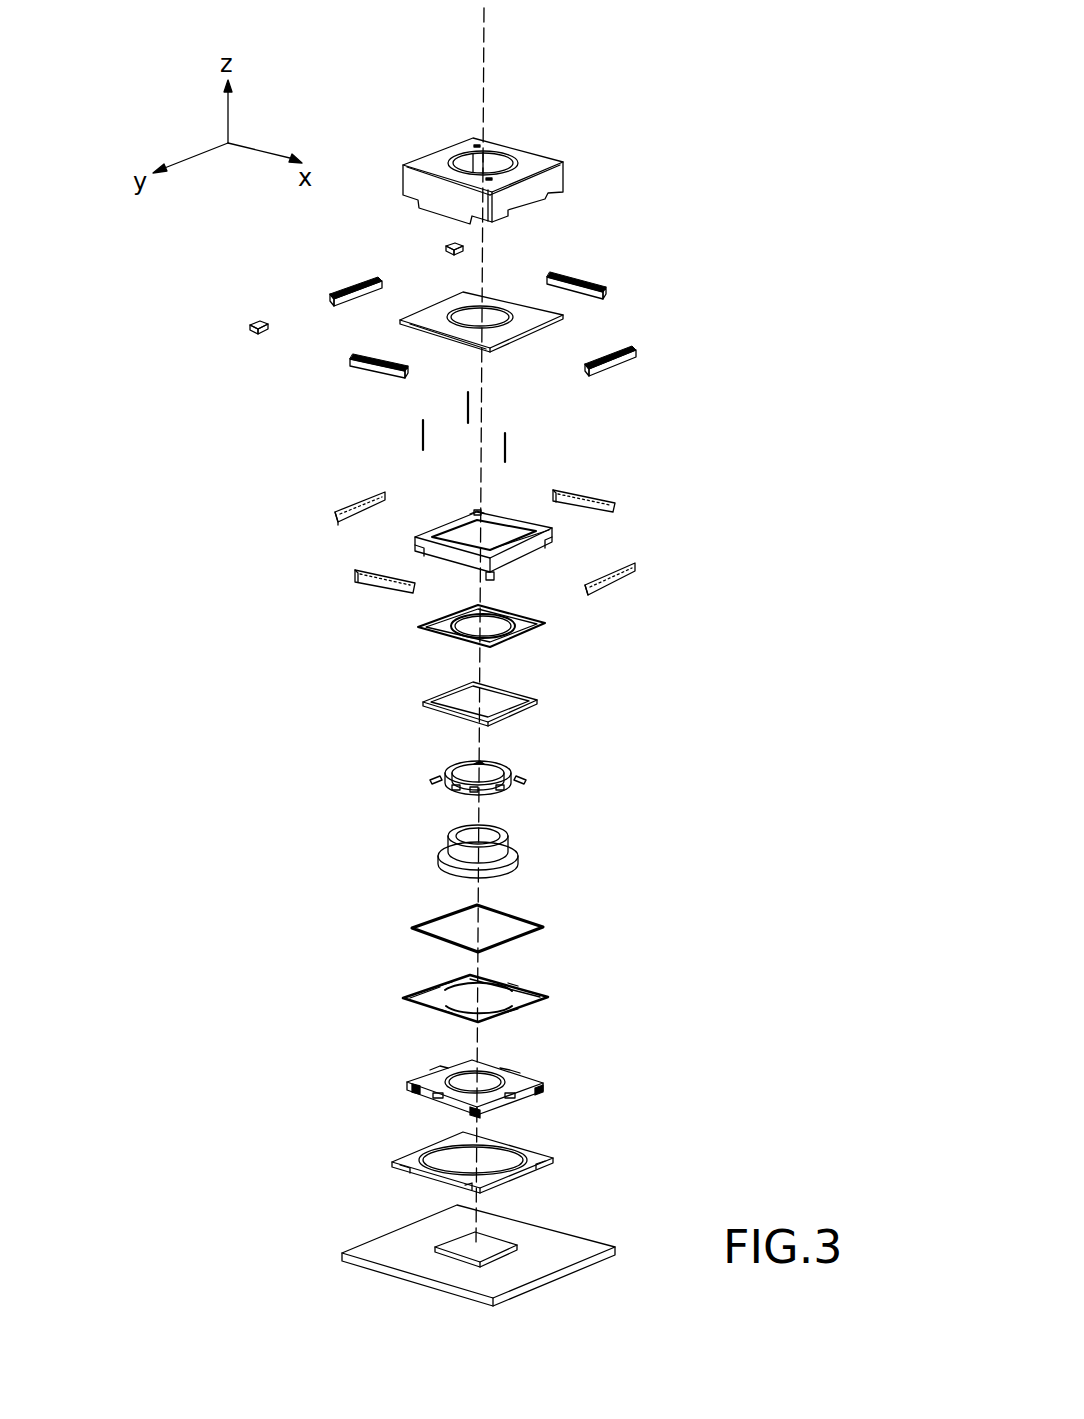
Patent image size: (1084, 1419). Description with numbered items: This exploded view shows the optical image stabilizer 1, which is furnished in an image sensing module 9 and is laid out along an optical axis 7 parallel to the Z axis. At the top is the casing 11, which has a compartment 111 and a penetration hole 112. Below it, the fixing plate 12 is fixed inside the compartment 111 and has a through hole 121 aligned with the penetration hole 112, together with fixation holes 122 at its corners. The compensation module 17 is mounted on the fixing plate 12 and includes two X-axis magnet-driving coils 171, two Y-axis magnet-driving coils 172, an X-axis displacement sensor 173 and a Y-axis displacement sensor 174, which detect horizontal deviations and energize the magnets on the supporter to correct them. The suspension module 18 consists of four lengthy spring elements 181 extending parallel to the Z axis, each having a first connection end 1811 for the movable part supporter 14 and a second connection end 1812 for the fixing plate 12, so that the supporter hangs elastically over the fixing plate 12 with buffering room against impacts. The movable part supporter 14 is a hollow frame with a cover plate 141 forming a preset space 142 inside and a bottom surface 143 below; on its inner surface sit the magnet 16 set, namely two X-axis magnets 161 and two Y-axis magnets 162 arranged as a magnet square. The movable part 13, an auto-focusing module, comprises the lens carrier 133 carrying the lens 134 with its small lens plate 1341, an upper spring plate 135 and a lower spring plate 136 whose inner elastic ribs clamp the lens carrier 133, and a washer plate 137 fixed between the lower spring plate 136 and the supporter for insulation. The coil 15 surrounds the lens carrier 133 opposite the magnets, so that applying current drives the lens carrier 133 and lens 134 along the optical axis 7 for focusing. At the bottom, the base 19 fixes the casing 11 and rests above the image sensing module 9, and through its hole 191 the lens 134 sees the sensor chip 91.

The optical image stabilizer 1 is at (750, 218).
The optical axis 7 is at (486, 46).
The image sensing module 9 is at (497, 1245).
The sensor chip 91 is at (490, 1243).
The casing 11 is at (527, 149).
The compartment 111 is at (500, 167).
The penetration hole 112 is at (485, 156).
The fixing plate 12 is at (532, 292).
The through hole 121 is at (518, 336).
The fixation hole 122 is at (543, 311).
The movable part 13 is at (652, 676).
The lens carrier 133 is at (532, 778).
The lens 134 is at (497, 845).
The small lens plate 1341 is at (470, 833).
The upper spring plate 135 is at (521, 637).
The lower spring plate 136 is at (530, 1005).
The washer plate 137 is at (535, 937).
The movable part supporter 14 is at (530, 550).
The cover plate 141 is at (410, 1082).
The preset space 142 is at (552, 526).
The bottom surface 143 is at (477, 512).
The coil 15 is at (425, 703).
The magnet 16 is at (316, 533).
The X-axis magnet 161 is at (617, 506).
The Y-axis magnet 162 is at (352, 503).
The compensation module 17 is at (278, 348).
The X-axis magnet-driving coil 171 is at (582, 276).
The Y-axis magnet-driving coil 172 is at (348, 283).
The X-axis displacement sensor 173 is at (256, 325).
The Y-axis displacement sensor 174 is at (444, 251).
The suspension module 18 is at (398, 440).
The spring element 181 is at (467, 403).
The first connection end 1811 is at (548, 437).
The second connection end 1812 is at (548, 437).
The base 19 is at (478, 1149).
The hole 191 is at (505, 1161).